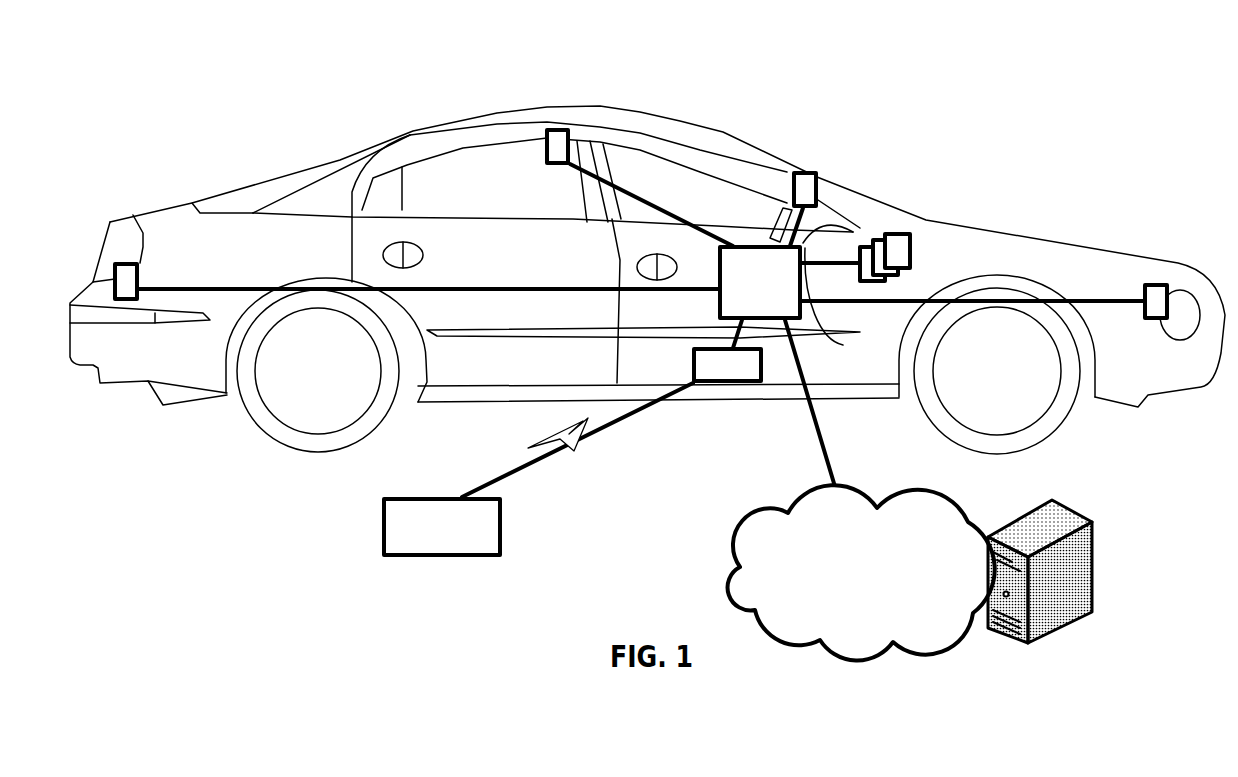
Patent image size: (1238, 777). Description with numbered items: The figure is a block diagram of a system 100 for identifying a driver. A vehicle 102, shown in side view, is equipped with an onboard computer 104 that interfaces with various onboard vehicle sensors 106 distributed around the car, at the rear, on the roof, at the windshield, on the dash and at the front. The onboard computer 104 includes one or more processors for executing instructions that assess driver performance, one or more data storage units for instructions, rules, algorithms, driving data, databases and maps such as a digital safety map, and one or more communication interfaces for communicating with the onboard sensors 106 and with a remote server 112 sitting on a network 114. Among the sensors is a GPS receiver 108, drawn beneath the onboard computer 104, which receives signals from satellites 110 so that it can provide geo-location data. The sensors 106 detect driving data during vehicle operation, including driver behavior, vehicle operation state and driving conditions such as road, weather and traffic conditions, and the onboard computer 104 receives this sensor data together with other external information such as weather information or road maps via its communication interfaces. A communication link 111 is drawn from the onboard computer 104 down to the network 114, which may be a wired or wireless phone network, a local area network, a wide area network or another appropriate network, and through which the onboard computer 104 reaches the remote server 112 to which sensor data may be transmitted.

The vehicle telematics system 100 is at (1018, 90).
The vehicle 102 is at (723, 132).
The onboard computer 104 is at (780, 293).
The onboard vehicle sensors 106 is at (139, 262).
The GPS receiver 108 is at (708, 384).
The satellites 110 is at (382, 515).
The communication link to network 111 is at (815, 406).
The remote server 112 is at (1095, 540).
The network 114 is at (907, 573).